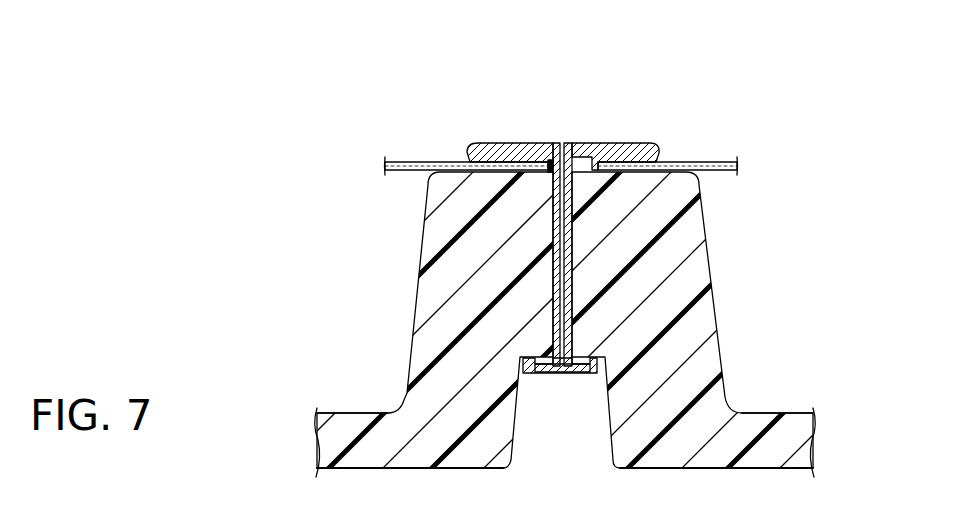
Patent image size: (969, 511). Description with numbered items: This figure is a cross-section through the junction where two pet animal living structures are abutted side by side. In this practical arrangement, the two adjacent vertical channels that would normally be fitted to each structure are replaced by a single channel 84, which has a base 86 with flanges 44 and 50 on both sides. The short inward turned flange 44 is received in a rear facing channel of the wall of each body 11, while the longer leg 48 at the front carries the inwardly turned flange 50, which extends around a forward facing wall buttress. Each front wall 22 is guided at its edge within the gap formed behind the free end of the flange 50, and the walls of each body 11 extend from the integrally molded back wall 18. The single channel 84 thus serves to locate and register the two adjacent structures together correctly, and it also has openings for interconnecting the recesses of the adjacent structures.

The body 11 is at (811, 319).
The back wall 18 is at (357, 428).
The front wall 22 is at (407, 160).
The inward turned flange 44 is at (548, 373).
The longer leg 48 is at (635, 295).
The inwardly turned flange 50 is at (502, 142).
The single channel 84 is at (570, 373).
The base 86 is at (575, 251).